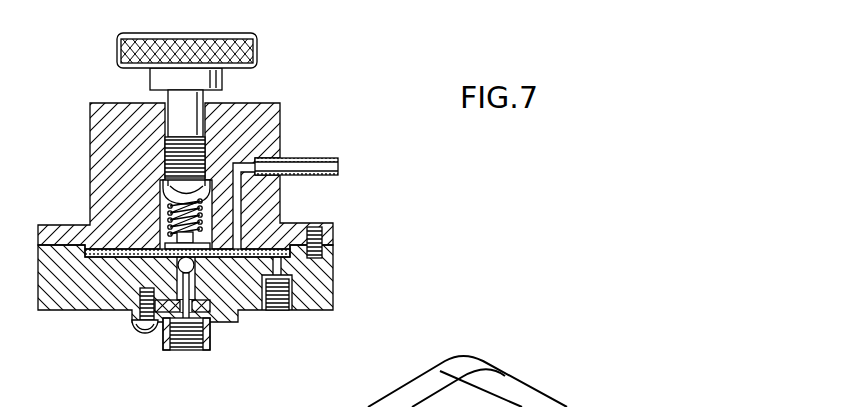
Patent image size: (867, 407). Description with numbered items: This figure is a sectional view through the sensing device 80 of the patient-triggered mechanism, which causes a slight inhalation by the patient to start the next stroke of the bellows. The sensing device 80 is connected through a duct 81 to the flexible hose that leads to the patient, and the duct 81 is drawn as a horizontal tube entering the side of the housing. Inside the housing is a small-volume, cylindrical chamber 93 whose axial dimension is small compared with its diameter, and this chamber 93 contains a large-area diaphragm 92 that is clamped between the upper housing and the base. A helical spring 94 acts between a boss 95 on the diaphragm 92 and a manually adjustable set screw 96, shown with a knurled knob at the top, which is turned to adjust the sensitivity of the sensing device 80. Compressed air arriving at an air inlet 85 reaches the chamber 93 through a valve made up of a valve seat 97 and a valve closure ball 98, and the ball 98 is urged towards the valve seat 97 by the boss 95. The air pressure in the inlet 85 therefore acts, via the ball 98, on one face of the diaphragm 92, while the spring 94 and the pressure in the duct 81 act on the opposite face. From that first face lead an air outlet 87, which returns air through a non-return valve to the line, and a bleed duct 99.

The sensing device 80 is at (282, 120).
The duct 81 is at (319, 158).
The air inlet 85 is at (183, 348).
The air outlet 87 is at (282, 312).
The diaphragm 92 is at (267, 252).
The cylindrical chamber 93 is at (98, 257).
The helical spring 94 is at (173, 205).
The boss 95 is at (165, 240).
The set screw 96 is at (257, 48).
The valve seat 97 is at (155, 330).
The valve closure ball 98 is at (178, 262).
The bleed duct 99 is at (245, 258).